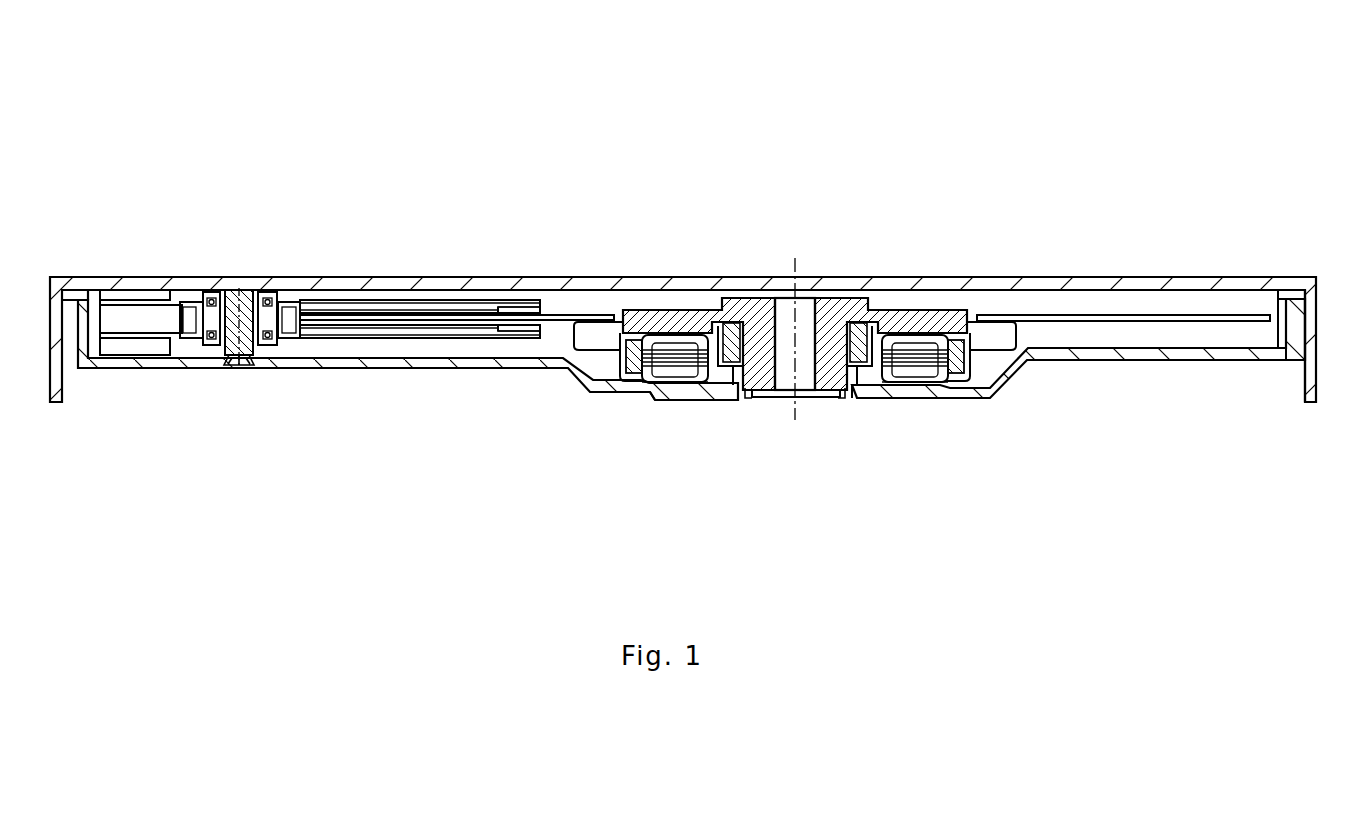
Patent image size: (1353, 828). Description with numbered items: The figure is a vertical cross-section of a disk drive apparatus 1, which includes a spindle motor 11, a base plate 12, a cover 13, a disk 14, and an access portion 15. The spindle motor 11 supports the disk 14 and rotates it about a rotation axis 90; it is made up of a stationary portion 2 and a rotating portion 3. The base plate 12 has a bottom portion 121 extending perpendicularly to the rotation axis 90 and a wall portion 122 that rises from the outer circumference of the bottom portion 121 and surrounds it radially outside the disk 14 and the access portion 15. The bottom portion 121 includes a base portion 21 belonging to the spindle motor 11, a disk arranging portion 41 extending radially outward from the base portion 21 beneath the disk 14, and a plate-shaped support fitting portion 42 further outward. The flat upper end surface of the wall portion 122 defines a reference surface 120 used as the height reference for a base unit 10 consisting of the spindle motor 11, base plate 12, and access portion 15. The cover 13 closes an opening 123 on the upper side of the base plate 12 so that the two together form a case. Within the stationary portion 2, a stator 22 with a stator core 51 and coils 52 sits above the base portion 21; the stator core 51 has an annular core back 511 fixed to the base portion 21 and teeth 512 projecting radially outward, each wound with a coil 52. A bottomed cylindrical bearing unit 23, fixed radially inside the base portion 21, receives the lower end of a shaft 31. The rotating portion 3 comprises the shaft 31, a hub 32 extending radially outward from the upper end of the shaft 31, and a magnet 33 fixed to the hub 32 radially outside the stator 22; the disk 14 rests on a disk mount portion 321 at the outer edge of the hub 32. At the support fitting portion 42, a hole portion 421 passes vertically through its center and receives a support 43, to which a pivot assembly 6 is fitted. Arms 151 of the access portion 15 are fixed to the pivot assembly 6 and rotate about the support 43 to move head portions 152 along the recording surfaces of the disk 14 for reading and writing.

The disk drive apparatus 1 is at (118, 186).
The stationary portion 2 is at (743, 410).
The rotating portion 3 is at (655, 308).
The pivot assembly 6 is at (212, 290).
The base unit 10 is at (704, 308).
The spindle motor 11 is at (783, 427).
The base plate 12 is at (1188, 456).
The cover 13 is at (1178, 280).
The disk 14 is at (1068, 323).
The access portion 15 is at (343, 300).
The base portion 21 is at (868, 386).
The stator 22 is at (990, 470).
The bearing unit 23 is at (828, 397).
The shaft 31 is at (805, 318).
The hub 32 is at (918, 320).
The magnet 33 is at (962, 335).
The disk arranging portion 41 is at (1133, 358).
The support fitting portion 42 is at (216, 357).
The support 43 is at (241, 289).
The stator core 51 is at (957, 391).
The coils 52 is at (910, 386).
The rotation axis 90 is at (792, 284).
The reference surface 120 is at (1307, 276).
The bottom portion 121 is at (1193, 365).
The wall portion 122 is at (1295, 365).
The opening 123 is at (1068, 292).
The arms 151 is at (441, 300).
The head portions 152 is at (510, 303).
The disk mount portion 321 is at (587, 321).
The hole portion 421 is at (243, 366).
The core back 511 is at (696, 393).
The teeth 512 is at (652, 399).